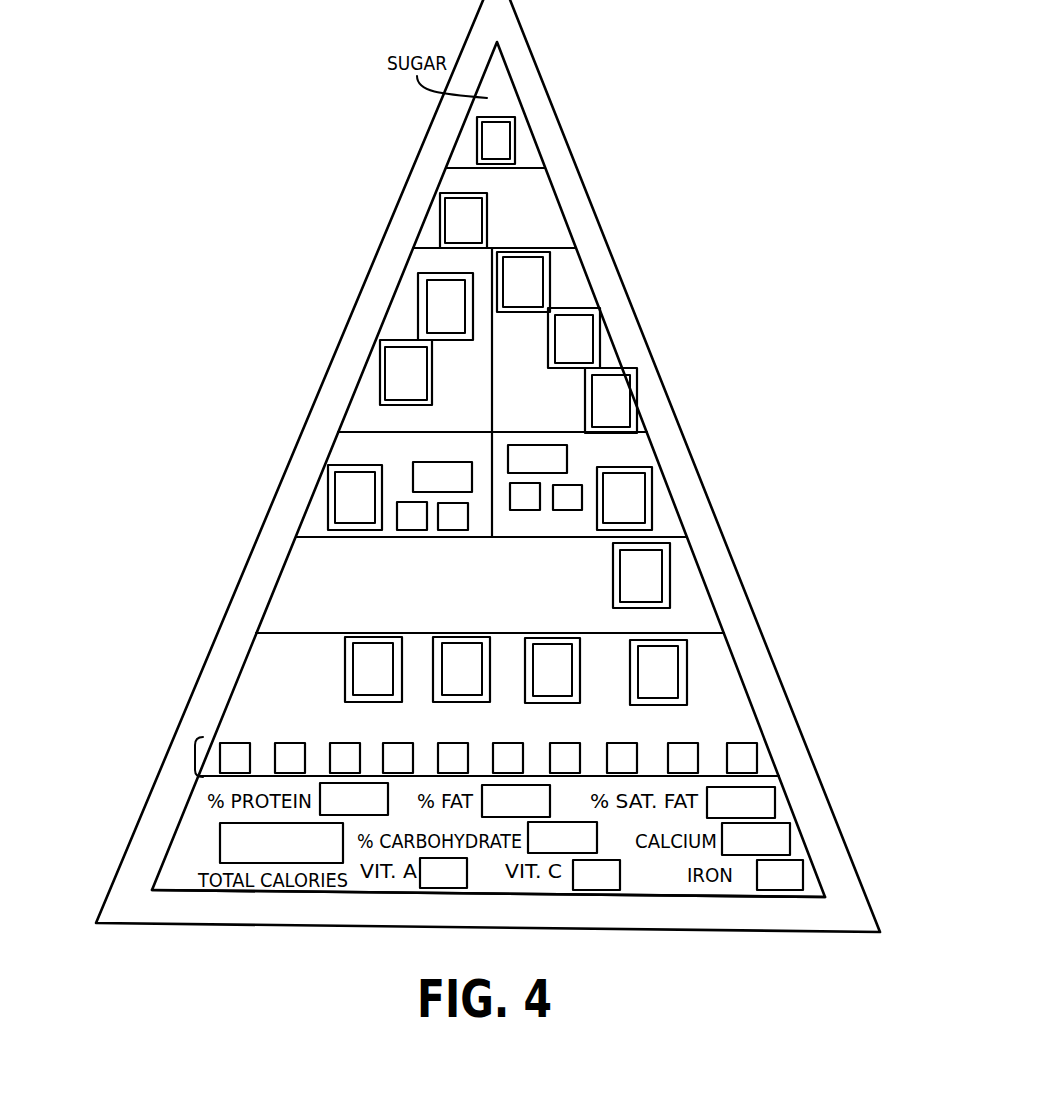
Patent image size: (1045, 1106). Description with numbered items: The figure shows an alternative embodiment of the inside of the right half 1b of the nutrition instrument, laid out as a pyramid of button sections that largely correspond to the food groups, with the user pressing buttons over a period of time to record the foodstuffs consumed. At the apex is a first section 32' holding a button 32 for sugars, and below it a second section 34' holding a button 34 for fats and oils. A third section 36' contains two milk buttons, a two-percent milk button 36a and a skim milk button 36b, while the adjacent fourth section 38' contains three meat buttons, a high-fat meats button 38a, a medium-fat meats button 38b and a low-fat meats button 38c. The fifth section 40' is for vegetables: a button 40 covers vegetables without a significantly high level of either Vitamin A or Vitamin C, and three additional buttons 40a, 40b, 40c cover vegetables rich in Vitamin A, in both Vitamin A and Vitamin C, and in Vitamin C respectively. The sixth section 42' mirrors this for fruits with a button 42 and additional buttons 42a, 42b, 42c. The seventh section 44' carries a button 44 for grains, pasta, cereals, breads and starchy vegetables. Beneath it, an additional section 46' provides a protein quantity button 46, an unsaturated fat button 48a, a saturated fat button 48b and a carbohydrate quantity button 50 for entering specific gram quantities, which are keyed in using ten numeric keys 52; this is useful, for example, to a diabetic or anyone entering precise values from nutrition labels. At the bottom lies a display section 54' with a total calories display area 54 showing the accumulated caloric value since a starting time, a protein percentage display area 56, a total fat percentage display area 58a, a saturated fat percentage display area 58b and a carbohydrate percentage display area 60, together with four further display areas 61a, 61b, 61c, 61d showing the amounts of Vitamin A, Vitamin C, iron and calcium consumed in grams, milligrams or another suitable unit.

The right half 1b is at (392, 131).
The first section 32' is at (535, 60).
The button corresponding to sugars 32 is at (543, 130).
The second section 34' is at (543, 164).
The button corresponding to fats and oils 34 is at (546, 220).
The third section 36' is at (410, 241).
The 2% milk button 36a is at (435, 308).
The skim milk button 36b is at (393, 370).
The fourth section 38' is at (586, 242).
The high-fat meats button 38a is at (530, 282).
The medium-fat meats button 38b is at (583, 337).
The low-fat meats button 38c is at (617, 397).
The fifth section 40' is at (417, 447).
The button corresponding to vegetables 40 is at (317, 480).
The Vitamin A vegetables button 40a is at (438, 507).
The Vitamin A and C vegetables button 40b is at (417, 473).
The Vitamin C vegetables button 40c is at (397, 513).
The sixth section 42' is at (559, 483).
The button corresponding to fruits 42 is at (664, 481).
The Vitamin A fruits button 42a is at (537, 487).
The Vitamin A and C fruits button 42b is at (567, 457).
The Vitamin C fruits button 42c is at (575, 503).
The button corresponding to grains 44 is at (698, 572).
The seventh section 44' is at (557, 583).
The protein quantity button 46 is at (292, 658).
The additional section 46' is at (225, 689).
The unsaturated fat button 48a is at (460, 655).
The saturated fat button 48b is at (558, 660).
The carbohydrate quantity button 50 is at (655, 668).
The numeric keys 52 is at (192, 757).
The total calories display area 54 is at (214, 827).
The display section 54' is at (440, 881).
The protein percentage display area 56 is at (340, 811).
The total fat percentage display area 58a is at (532, 813).
The saturated fat percentage display area 58b is at (759, 814).
The carbohydrate percentage display area 60 is at (549, 849).
The Vitamin A display area 61a is at (426, 886).
The Vitamin C display area 61b is at (579, 888).
The iron display area 61c is at (763, 888).
The calcium display area 61d is at (737, 851).